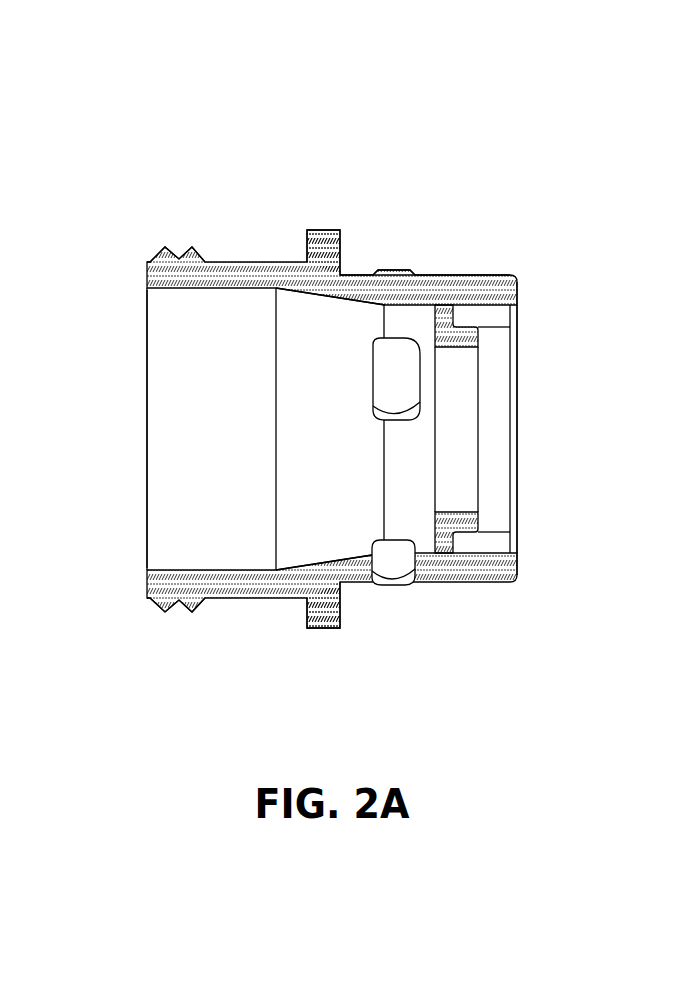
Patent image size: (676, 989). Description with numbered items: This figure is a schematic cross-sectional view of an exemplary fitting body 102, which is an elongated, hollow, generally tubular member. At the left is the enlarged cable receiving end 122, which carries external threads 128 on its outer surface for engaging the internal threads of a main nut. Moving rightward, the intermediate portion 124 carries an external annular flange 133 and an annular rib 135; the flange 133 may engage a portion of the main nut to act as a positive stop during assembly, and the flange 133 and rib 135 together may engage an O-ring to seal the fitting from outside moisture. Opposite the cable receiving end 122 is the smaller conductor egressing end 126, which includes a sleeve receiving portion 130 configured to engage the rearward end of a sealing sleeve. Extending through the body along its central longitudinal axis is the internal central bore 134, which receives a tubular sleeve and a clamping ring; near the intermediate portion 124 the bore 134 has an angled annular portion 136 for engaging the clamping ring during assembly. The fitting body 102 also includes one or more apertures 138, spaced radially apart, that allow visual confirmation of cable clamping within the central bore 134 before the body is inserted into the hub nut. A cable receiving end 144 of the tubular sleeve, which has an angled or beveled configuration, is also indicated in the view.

The fitting body 102 is at (316, 113).
The cable receiving end 122 is at (186, 233).
The intermediate portion 124 is at (350, 636).
The conductor egressing end 126 is at (485, 243).
The external threads 128 is at (183, 598).
The sleeve receiving portion 130 is at (480, 394).
The external annular flange 133 is at (308, 230).
The central bore 134 is at (213, 466).
The annular rib 135 is at (392, 270).
The angled annular portion 136 is at (337, 291).
The apertures 138 is at (383, 553).
The cable receiving end 144 is at (457, 535).